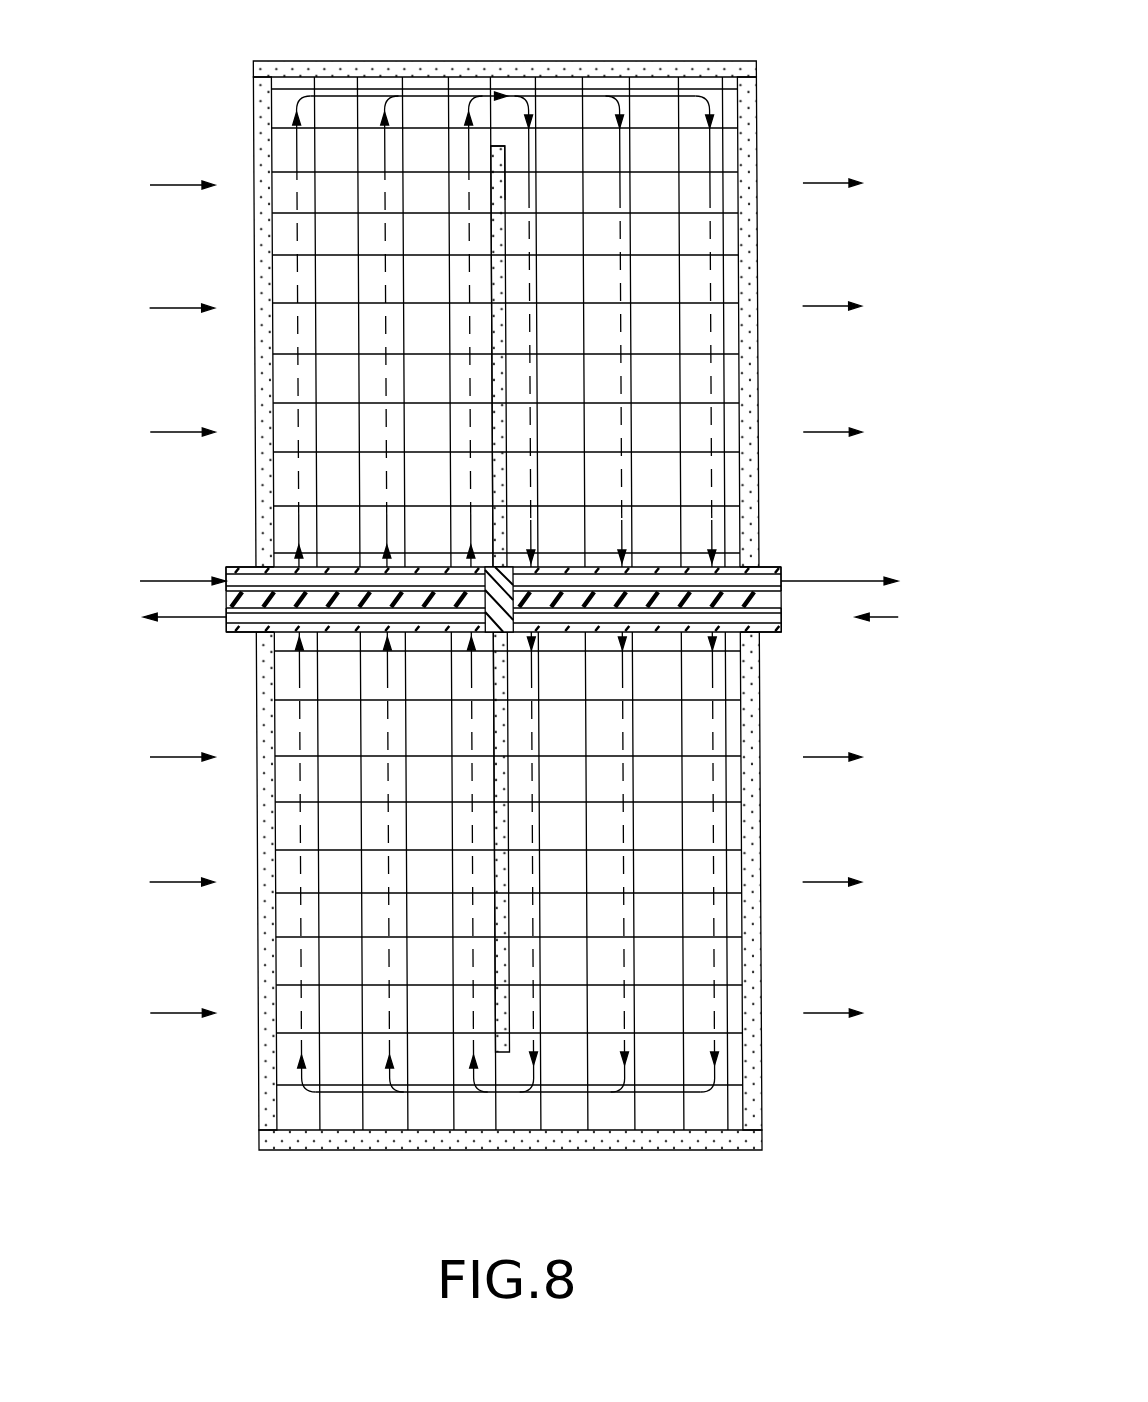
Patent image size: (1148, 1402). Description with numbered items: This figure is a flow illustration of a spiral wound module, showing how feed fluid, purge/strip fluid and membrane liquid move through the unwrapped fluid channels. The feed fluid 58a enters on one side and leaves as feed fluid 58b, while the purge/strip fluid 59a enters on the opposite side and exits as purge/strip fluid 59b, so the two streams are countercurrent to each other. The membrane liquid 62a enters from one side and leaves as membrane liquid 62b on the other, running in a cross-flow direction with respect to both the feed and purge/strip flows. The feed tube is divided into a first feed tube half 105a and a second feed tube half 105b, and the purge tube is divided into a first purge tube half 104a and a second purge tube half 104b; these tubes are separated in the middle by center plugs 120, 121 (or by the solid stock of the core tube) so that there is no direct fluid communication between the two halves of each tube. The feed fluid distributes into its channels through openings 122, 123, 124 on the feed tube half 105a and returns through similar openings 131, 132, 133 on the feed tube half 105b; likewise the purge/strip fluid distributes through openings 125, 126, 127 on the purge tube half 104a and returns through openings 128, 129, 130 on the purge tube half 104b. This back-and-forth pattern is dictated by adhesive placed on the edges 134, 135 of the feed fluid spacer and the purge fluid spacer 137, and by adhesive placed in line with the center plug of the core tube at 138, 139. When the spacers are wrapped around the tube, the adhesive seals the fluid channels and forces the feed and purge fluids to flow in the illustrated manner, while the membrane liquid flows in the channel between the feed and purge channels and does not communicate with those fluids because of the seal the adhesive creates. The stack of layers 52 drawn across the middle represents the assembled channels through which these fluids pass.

The membrane stack assembly 52 is at (774, 632).
The feed fluid 58a is at (153, 583).
The feed fluid 58b is at (867, 580).
The purge/strip fluid 59a is at (904, 615).
The purge/strip fluid 59b is at (151, 620).
The membrane liquid 62a is at (151, 599).
The membrane liquid 62b is at (860, 598).
The purge tube half 104a is at (774, 610).
The purge tube half 104b is at (229, 632).
The feed tube half 105a is at (223, 567).
The feed tube half 105b is at (762, 571).
The center plug 120 is at (486, 567).
The center plug 121 is at (509, 640).
The opening 122 is at (460, 568).
The opening 123 is at (375, 568).
The opening 124 is at (293, 580).
The opening 125 is at (708, 634).
The opening 126 is at (619, 630).
The opening 127 is at (524, 630).
The opening 128 is at (290, 618).
The opening 129 is at (380, 618).
The opening 130 is at (481, 628).
The opening 131 is at (534, 573).
The opening 132 is at (621, 585).
The opening 133 is at (715, 580).
The spacer edge 134 is at (415, 67).
The spacer edge 135 is at (389, 1142).
The purge fluid spacer 137 is at (641, 1108).
The adhesive line in line with center plug 138 is at (651, 102).
The adhesive line in line with center plug 139 is at (504, 186).